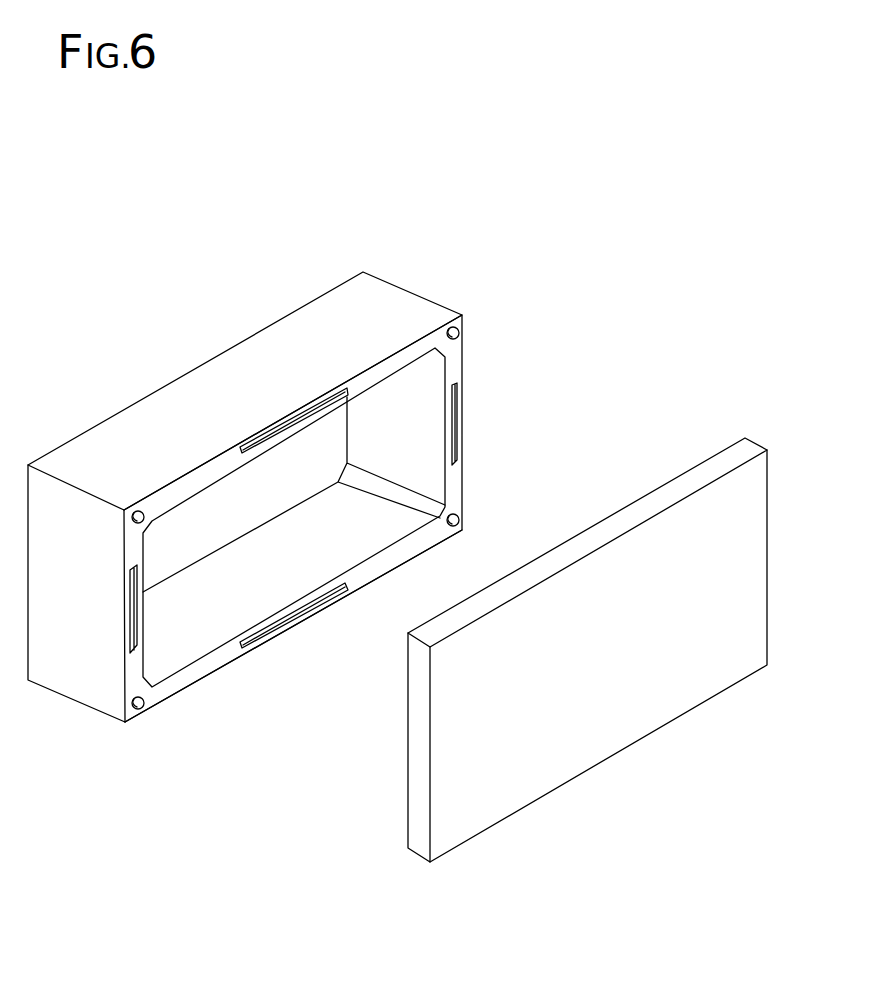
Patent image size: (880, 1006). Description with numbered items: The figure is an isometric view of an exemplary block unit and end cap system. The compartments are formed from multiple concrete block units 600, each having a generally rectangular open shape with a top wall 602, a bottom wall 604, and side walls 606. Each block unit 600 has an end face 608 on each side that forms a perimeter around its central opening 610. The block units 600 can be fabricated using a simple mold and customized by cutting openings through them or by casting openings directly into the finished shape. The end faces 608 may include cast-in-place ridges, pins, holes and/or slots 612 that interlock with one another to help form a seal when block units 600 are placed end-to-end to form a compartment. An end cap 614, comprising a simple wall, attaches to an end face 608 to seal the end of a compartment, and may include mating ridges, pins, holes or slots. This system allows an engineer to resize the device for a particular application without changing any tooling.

The block unit 600 is at (512, 325).
The top wall 602 is at (200, 377).
The bottom wall 604 is at (188, 643).
The side walls 606 is at (413, 402).
The end face 608 is at (400, 360).
The central opening 610 is at (258, 499).
The ridges, pins, holes and/or slots 612 is at (142, 703).
The cover plate 614 is at (700, 508).